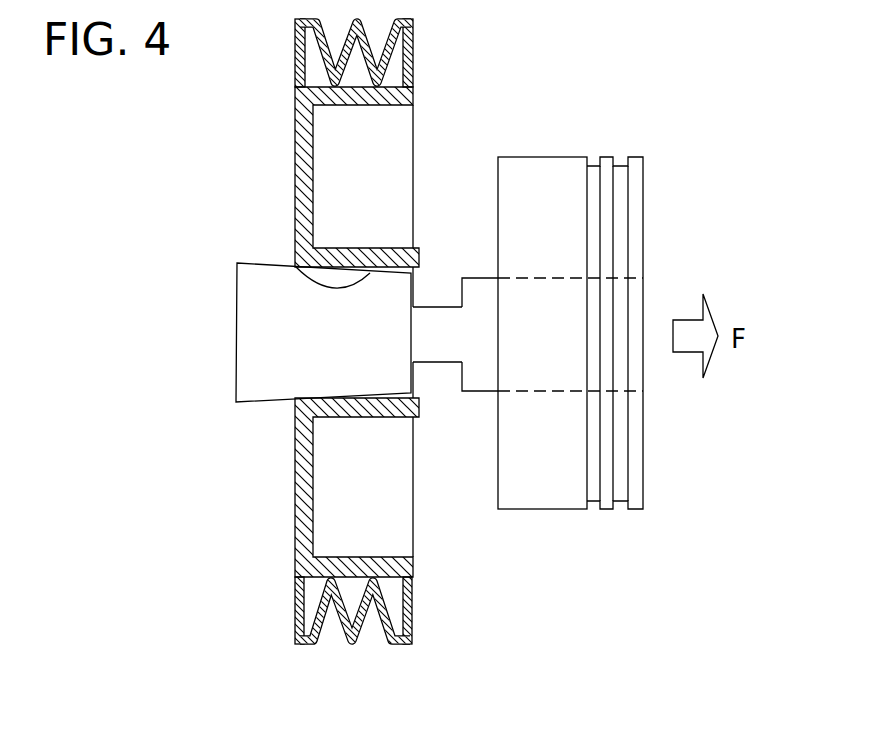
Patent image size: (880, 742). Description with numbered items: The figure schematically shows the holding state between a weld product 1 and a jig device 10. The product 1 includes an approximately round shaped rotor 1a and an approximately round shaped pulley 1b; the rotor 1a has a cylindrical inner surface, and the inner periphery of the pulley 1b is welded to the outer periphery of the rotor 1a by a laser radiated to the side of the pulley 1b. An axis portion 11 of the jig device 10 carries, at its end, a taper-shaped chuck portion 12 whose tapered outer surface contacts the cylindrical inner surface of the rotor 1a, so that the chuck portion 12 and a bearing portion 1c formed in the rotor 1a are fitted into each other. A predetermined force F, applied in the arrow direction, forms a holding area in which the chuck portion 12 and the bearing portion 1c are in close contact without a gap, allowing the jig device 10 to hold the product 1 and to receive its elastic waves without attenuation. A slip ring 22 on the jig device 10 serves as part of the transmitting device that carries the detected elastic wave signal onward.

The weld product 1 is at (350, 356).
The rotor 1a is at (300, 470).
The pulley 1b is at (352, 644).
The bearing portion 1c is at (296, 267).
The jig device 10 is at (538, 509).
The axis portion 11 is at (481, 377).
The chuck portion 12 is at (250, 343).
The slip ring 22 is at (617, 503).